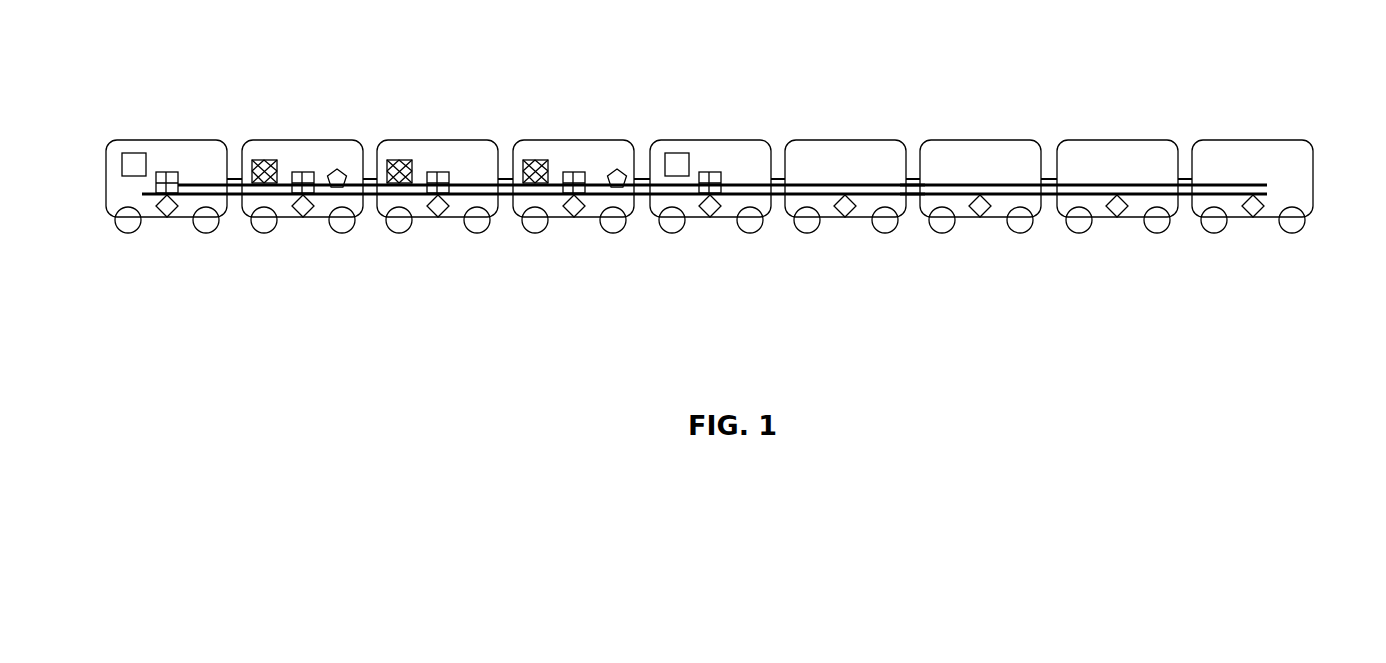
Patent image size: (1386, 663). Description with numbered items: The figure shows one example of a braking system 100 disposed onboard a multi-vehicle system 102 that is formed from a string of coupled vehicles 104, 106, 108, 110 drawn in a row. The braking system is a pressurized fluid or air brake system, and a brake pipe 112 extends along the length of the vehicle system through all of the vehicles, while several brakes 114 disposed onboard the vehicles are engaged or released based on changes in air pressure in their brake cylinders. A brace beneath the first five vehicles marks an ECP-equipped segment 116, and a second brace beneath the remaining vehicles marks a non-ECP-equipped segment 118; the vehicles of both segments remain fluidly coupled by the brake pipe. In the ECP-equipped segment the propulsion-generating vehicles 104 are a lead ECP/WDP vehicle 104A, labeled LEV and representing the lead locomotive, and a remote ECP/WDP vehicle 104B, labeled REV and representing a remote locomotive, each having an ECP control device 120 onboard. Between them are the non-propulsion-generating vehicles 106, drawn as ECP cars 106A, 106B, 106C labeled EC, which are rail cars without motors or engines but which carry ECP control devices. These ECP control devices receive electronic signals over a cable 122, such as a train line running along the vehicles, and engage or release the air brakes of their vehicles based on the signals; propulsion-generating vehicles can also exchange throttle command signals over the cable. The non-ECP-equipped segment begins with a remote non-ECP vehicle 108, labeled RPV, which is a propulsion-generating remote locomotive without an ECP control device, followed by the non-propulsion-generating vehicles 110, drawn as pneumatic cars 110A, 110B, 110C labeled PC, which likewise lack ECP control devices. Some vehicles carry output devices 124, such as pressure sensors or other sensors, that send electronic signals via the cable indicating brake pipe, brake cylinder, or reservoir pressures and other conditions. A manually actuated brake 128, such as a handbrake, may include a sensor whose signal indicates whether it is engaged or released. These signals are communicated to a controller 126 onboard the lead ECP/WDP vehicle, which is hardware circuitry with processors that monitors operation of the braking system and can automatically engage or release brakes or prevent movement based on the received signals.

The braking system 100 is at (1310, 58).
The multi-vehicle system 102 is at (1318, 140).
The propulsion-generating vehicles 104 is at (127, 131).
The lead ECP/WDP vehicle 104A is at (129, 181).
The remote ECP/WDP vehicle 104B is at (706, 140).
The non-propulsion-generating vehicles 106 is at (267, 131).
The ECP car 106A is at (302, 181).
The ECP car 106B is at (426, 181).
The ECP car 106C is at (597, 140).
The remote non-ECP vehicle 108 is at (857, 131).
The non-propulsion-generating vehicles 110 is at (964, 131).
The pneumatic car 110A is at (990, 140).
The pneumatic car 110B is at (1128, 140).
The pneumatic car 110C is at (1248, 140).
The brake pipe 112 is at (913, 198).
The brakes 114 is at (432, 208).
The ECP-equipped segment 116 is at (770, 292).
The non-ECP-equipped segment 118 is at (785, 292).
The ECP control device 120 is at (160, 172).
The cable 122 is at (480, 184).
The output devices 124 is at (402, 162).
The controller 126 is at (119, 165).
The manually actuated brake 128 is at (328, 190).